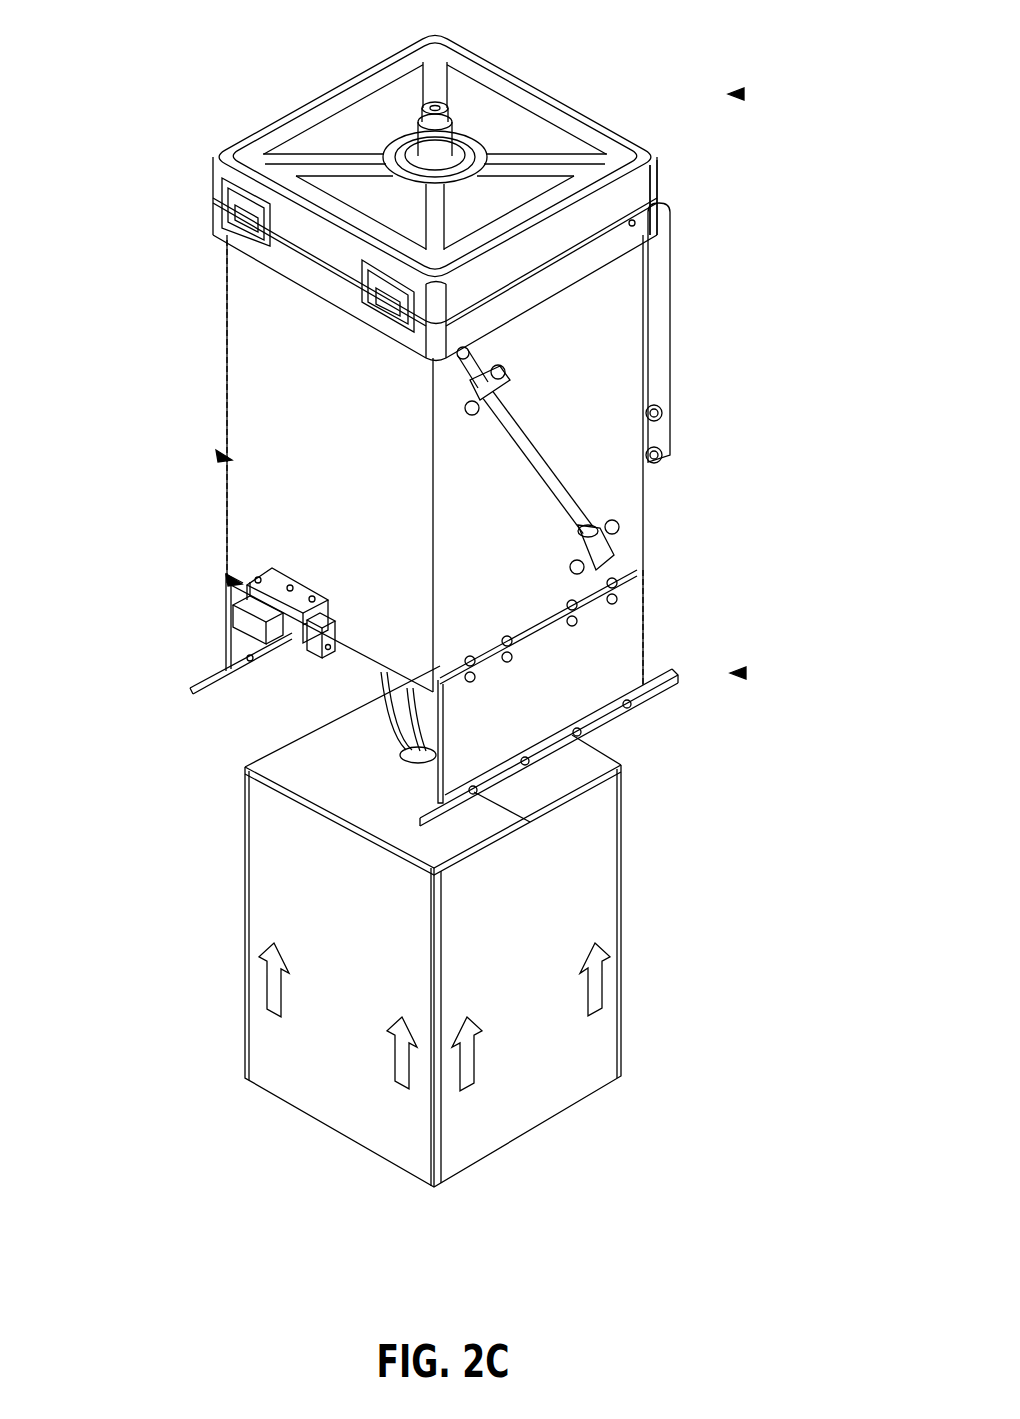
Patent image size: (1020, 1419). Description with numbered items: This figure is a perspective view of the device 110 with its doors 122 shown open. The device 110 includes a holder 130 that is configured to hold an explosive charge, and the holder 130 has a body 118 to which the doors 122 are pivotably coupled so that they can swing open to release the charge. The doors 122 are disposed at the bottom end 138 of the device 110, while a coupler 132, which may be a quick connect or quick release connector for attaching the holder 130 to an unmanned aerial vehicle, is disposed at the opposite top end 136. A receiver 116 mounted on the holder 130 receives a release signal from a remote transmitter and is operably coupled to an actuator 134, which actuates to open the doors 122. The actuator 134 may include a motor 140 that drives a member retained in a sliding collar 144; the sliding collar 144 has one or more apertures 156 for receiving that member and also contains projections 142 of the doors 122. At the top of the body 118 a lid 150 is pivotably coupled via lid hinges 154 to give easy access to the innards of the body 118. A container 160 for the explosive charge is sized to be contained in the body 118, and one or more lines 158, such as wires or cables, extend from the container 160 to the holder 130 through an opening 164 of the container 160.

The device 110 is at (168, 90).
The receiver 116 is at (662, 388).
The body 118 is at (222, 372).
The doors 122 is at (232, 656).
The holder 130 is at (216, 455).
The coupler 132 is at (422, 110).
The actuator 134 is at (228, 578).
The top end 136 is at (745, 94).
The bottom end 138 is at (745, 673).
The motor 140 is at (233, 600).
The projections 142 is at (200, 690).
The sliding collar 144 is at (332, 622).
The lid 150 is at (660, 184).
The lid hinges 154 is at (220, 203).
The apertures 156 is at (522, 498).
The lines 158 is at (405, 742).
The container 160 is at (623, 1008).
The opening 164 is at (404, 765).